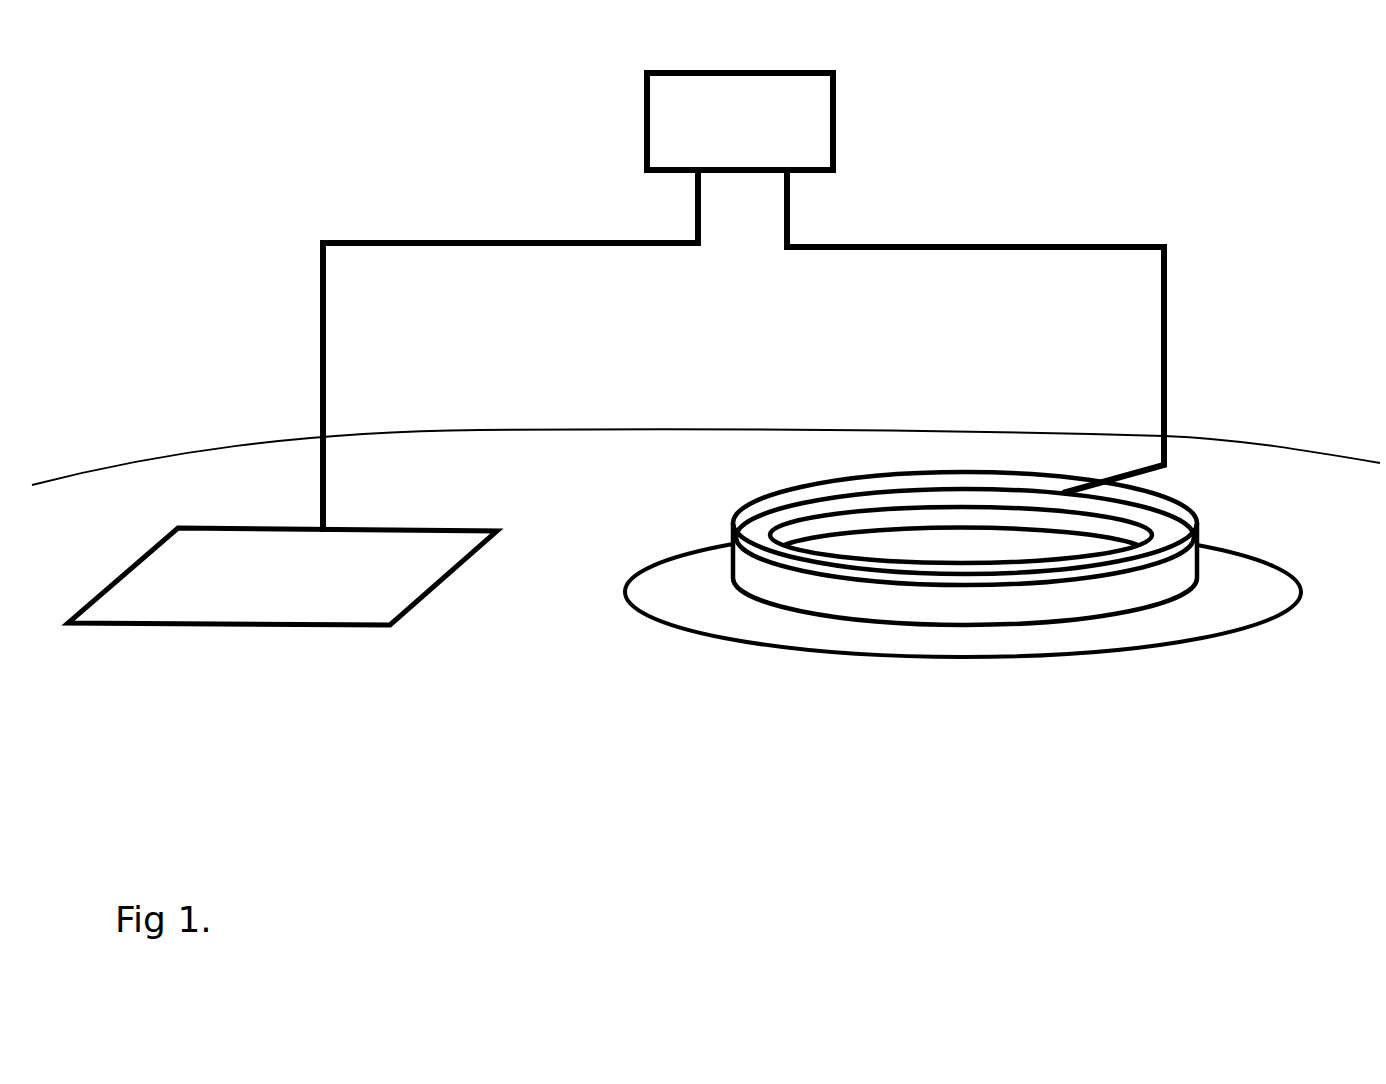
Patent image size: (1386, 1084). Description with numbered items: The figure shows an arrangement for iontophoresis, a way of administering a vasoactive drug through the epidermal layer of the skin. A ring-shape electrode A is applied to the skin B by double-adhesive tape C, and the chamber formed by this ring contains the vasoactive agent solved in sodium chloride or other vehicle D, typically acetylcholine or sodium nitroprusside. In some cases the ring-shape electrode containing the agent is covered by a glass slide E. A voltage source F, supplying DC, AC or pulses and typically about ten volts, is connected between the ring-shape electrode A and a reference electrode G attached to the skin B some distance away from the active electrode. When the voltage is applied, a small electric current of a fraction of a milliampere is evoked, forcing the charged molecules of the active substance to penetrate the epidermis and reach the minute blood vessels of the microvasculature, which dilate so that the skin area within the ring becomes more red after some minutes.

The ring-shape electrode A is at (890, 614).
The skin B is at (1133, 653).
The double-adhesive tape C is at (668, 580).
The vasoactive agent solved in 0.9% sodium chloride or other vehicle D is at (1070, 547).
The glass slide E is at (843, 480).
The voltage source F is at (771, 133).
The reference electrode G is at (168, 582).